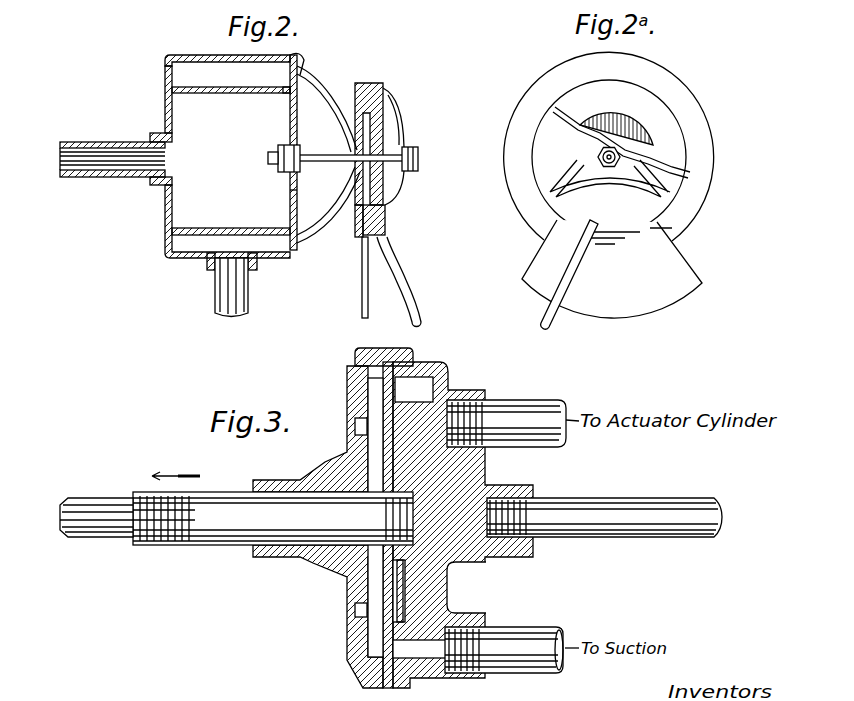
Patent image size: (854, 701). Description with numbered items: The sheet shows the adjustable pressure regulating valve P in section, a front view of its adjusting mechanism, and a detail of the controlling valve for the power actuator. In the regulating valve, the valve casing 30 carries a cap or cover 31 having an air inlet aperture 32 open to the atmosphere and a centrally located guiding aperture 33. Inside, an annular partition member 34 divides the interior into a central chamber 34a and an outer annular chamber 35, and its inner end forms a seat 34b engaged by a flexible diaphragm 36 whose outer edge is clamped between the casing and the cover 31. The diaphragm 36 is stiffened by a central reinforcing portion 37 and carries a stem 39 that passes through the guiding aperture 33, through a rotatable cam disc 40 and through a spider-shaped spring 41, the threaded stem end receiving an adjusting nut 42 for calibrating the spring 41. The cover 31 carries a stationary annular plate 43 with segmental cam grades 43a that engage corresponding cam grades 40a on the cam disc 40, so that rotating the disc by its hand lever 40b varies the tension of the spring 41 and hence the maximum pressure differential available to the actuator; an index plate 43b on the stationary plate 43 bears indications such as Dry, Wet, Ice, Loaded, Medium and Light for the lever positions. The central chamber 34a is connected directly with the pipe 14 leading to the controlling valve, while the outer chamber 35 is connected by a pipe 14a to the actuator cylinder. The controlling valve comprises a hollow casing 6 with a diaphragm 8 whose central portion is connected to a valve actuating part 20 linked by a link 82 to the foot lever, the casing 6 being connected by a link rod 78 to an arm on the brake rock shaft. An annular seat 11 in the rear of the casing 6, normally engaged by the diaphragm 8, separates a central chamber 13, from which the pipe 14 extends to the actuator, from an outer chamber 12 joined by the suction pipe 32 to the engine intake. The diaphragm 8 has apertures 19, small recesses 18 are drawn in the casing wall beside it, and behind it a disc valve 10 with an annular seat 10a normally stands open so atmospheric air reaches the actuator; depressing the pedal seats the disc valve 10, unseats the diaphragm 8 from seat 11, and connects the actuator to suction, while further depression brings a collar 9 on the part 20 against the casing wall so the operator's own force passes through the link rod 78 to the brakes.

In FIG. 2, the pressure regulating valve P is at (166, 58).
In FIG. 2, the valve casing 30 is at (197, 54).
In FIG. 2, the cap or cover 31 is at (303, 72).
In FIG. 2A, the cap or cover 31 is at (710, 152).
In FIG. 2, the partition member 34 is at (228, 94).
In FIG. 2, the central chamber 34a is at (223, 157).
In FIG. 2, the annular seat 34b is at (285, 95).
In FIG. 2, the outer annular chamber 35 is at (220, 234).
In FIG. 2, the reinforcing portion 37 is at (290, 197).
In FIG. 2, the flexible pipe 14 is at (100, 142).
In FIG. 3, the flexible pipe 14 is at (525, 401).
In FIG. 2, the pipe to actuator cylinder 14a is at (249, 299).
In FIG. 2, the flexible diaphragm 36 is at (300, 112).
In FIG. 2, the air inlet aperture / suction pipe 32 is at (325, 142).
In FIG. 3, the air inlet aperture / suction pipe 32 is at (525, 627).
In FIG. 2, the segmental cam grades 43a is at (364, 84).
In FIG. 2A, the segmental cam grades 43a is at (657, 118).
In FIG. 2, the annular plate 43 is at (360, 215).
In FIG. 2A, the annular plate 43 is at (655, 143).
In FIG. 2, the segmental cam grades 40a is at (385, 207).
In FIG. 2, the guiding aperture 33 is at (366, 147).
In FIG. 2, the spring 41 is at (399, 141).
In FIG. 2A, the spring 41 is at (596, 154).
In FIG. 2, the stem 39 is at (414, 158).
In FIG. 2A, the stem 39 is at (607, 172).
In FIG. 2, the adjusting nut 42 is at (411, 170).
In FIG. 2A, the adjusting nut 42 is at (617, 172).
In FIG. 2, the rotatable cam disc 40 is at (372, 240).
In FIG. 2A, the rotatable cam disc 40 is at (543, 181).
In FIG. 2, the hand lever 40b is at (418, 303).
In FIG. 2A, the hand lever 40b is at (548, 322).
In FIG. 2, the index plate 43b is at (364, 307).
In FIG. 2A, the index plate 43b is at (666, 303).
In FIG. 3, the hollow casing 6 is at (355, 372).
In FIG. 3, the diaphragm 8 is at (390, 397).
In FIG. 3, the apertures 19 is at (390, 453).
In FIG. 3, the grooves 18 is at (355, 425).
In FIG. 3, the annular seat 11 is at (420, 396).
In FIG. 3, the disk or valve 10 is at (437, 576).
In FIG. 3, the outer chamber 12 is at (425, 652).
In FIG. 3, the collar 9 is at (383, 560).
In FIG. 3, the annular seat 10a is at (388, 612).
In FIG. 3, the central chamber 13 is at (482, 472).
In FIG. 3, the valve actuating part 20 is at (220, 492).
In FIG. 3, the link 82 is at (88, 498).
In FIG. 3, the link rod 78 is at (603, 500).